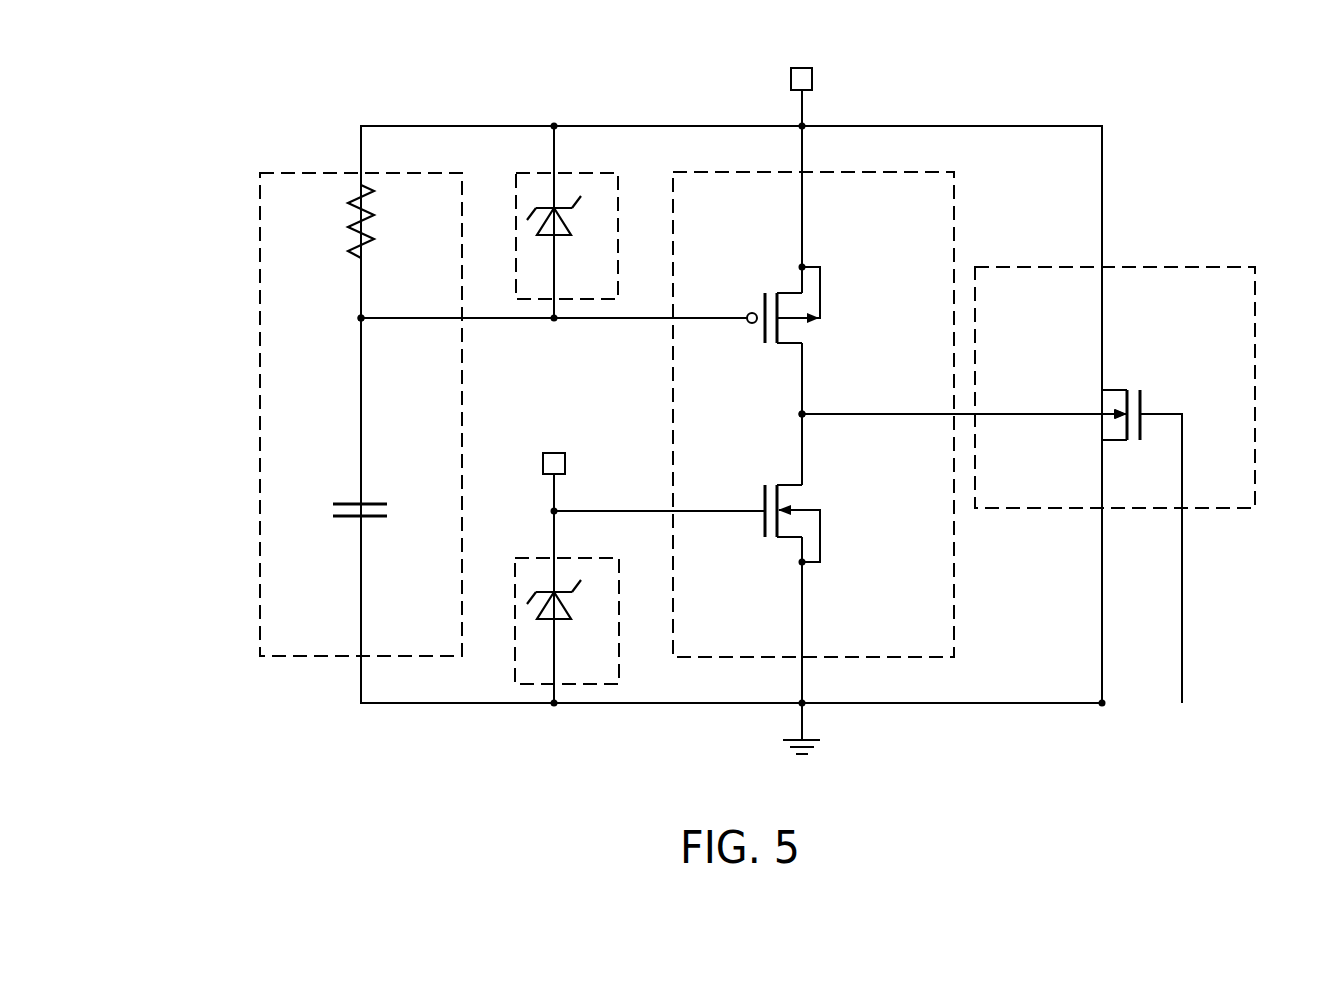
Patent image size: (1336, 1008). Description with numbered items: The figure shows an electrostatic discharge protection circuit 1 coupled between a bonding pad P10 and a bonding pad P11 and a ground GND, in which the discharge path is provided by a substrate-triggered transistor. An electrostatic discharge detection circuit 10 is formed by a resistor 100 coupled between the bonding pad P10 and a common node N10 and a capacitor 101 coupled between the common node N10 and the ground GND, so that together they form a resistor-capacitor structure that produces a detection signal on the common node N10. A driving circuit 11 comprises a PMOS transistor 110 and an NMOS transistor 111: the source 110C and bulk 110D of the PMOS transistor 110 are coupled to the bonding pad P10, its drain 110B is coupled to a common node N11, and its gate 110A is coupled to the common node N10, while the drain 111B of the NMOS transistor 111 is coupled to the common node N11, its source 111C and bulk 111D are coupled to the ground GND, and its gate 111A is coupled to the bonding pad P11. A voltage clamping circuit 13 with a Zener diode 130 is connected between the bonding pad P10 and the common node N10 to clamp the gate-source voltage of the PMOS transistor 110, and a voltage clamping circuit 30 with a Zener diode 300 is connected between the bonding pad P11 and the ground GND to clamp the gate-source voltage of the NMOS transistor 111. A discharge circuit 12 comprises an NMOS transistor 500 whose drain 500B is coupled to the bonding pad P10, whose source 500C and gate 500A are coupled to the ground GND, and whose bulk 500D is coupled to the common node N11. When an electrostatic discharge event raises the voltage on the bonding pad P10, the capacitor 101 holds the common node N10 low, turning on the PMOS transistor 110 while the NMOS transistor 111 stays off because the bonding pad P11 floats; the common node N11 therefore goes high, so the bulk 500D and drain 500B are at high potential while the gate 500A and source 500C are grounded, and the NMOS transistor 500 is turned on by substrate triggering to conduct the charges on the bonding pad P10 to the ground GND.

The electrostatic discharge protection circuit 1 is at (166, 88).
The electrostatic discharge detection circuit 10 is at (262, 172).
The resistor 100 is at (376, 213).
The capacitor 101 is at (374, 503).
The driving circuit 11 is at (673, 172).
The PMOS transistor 110 is at (784, 294).
The gate 110A is at (745, 331).
The drain 110B is at (798, 355).
The source 110C is at (800, 283).
The bulk 110D is at (805, 323).
The NMOS transistor 111 is at (784, 535).
The gate 111A is at (740, 515).
The drain 111B is at (800, 473).
The source 111C is at (798, 547).
The bulk 111D is at (842, 482).
The discharge circuit 12 is at (975, 267).
The NMOS transistor 500 is at (1120, 390).
The gate 500A is at (1192, 390).
The drain 500B is at (1100, 379).
The source 500C is at (1100, 452).
The bulk 500D is at (1120, 412).
The voltage clamping circuit 13 is at (588, 172).
The Zener diode 130 is at (563, 238).
The voltage clamping circuit 30 is at (588, 557).
The Zener diode 300 is at (563, 622).
The bonding pad P10 is at (814, 79).
The bonding pad P11 is at (552, 452).
The common node N10 is at (357, 318).
The common node N11 is at (806, 412).
The ground GND is at (801, 768).